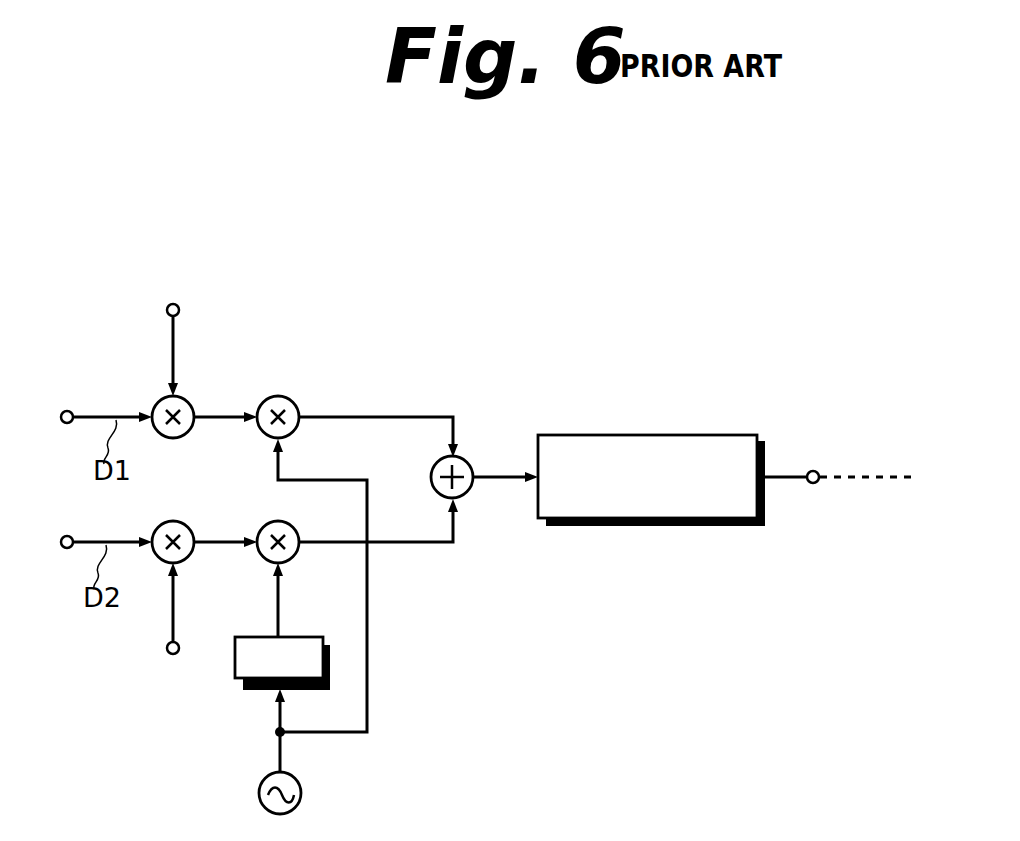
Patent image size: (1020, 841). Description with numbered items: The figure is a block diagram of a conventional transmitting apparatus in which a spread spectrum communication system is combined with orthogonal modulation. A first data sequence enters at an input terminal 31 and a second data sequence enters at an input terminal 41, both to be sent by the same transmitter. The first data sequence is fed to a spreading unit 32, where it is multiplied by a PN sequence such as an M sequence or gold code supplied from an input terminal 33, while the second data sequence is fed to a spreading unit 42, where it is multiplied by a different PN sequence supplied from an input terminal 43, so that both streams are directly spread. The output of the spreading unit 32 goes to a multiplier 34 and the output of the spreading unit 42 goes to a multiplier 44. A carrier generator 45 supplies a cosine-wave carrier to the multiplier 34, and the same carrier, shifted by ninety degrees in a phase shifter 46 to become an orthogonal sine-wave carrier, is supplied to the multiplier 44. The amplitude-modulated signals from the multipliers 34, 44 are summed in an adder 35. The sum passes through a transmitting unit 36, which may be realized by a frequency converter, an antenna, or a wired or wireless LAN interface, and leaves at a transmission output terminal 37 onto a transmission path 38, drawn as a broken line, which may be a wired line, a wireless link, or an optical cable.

The input terminal 31 is at (70, 410).
The spreading unit 32 is at (190, 400).
The input terminal 33 is at (180, 311).
The multiplier 34 is at (296, 400).
The adder 35 is at (468, 458).
The transmitting unit 36 is at (576, 434).
The transmission output terminal 37 is at (816, 470).
The transmission path 38 is at (867, 483).
The input terminal 41 is at (70, 535).
The spreading unit 42 is at (190, 525).
The input terminal 43 is at (175, 655).
The multiplier 44 is at (296, 525).
The carrier generator 45 is at (258, 795).
The phase shifter 46 is at (300, 636).